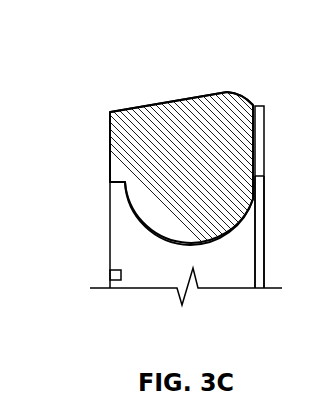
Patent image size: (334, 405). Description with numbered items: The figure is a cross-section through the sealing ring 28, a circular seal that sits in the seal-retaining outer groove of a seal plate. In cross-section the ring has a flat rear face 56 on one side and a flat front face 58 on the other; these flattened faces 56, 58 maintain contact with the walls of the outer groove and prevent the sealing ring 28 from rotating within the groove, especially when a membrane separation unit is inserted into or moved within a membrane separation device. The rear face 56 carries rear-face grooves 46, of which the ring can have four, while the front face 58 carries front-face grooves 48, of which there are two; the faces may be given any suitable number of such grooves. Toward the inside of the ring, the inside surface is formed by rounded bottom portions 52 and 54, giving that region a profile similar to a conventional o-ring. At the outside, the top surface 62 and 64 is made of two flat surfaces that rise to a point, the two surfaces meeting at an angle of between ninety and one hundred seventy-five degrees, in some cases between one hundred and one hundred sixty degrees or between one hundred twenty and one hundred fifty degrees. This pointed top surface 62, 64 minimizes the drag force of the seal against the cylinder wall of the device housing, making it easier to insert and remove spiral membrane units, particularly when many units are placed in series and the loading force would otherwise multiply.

The sealing ring 28 is at (113, 42).
The rear-face groove 46 is at (110, 274).
The front-face groove 48 is at (256, 165).
The rounded bottom portion 52 is at (155, 233).
The rounded bottom portion 54 is at (239, 220).
The rear face 56 is at (110, 138).
The front face 58 is at (264, 137).
The top surface 62 is at (172, 99).
The top surface 64 is at (242, 98).